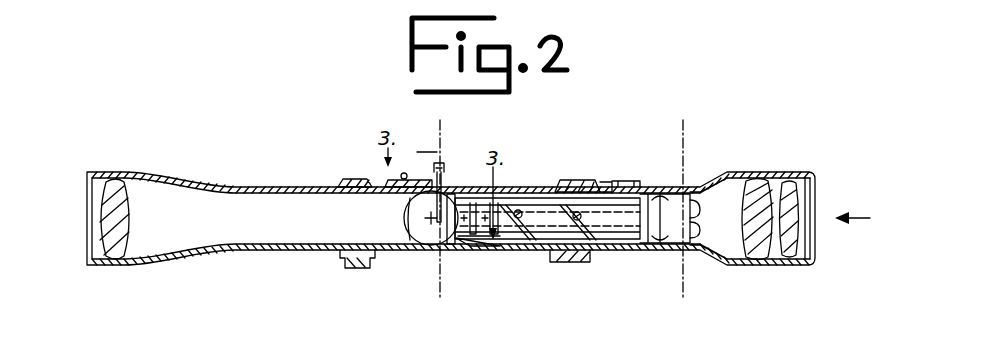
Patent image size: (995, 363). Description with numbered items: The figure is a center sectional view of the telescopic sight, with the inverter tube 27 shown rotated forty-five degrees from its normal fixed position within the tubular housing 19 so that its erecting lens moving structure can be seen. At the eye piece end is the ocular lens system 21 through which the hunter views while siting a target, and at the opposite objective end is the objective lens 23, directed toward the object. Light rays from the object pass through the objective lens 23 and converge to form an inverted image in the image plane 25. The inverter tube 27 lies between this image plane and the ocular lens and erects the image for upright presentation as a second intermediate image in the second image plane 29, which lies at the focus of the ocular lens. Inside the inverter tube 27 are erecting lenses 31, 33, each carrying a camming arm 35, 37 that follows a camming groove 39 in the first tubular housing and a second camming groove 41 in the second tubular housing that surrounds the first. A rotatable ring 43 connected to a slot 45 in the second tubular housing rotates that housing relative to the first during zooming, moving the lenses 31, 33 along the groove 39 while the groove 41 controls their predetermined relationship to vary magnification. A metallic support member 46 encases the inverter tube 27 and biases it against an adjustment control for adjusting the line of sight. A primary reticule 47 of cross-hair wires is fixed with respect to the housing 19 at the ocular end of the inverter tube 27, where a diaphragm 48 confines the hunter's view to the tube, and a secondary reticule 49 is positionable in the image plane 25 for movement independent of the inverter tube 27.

The housing 19 is at (380, 184).
The ocular lens system 21 is at (786, 158).
The objective lens 23 is at (103, 236).
The image plane 25 is at (443, 288).
The inverter tube 27 is at (600, 181).
The second image plane 29 is at (690, 298).
The erecting lens 31 is at (537, 185).
The erecting lens 33 is at (580, 180).
The camming arm 35 is at (520, 232).
The camming arm 37 is at (570, 265).
The camming groove 39 is at (488, 240).
The second camming groove 41 is at (525, 195).
The rotatable ring 43 is at (622, 178).
The slot 45 is at (627, 181).
The metallic support member 46 is at (486, 250).
The primary reticule 47 is at (708, 219).
The diaphragm 48 is at (702, 186).
The secondary reticule 49 is at (420, 212).